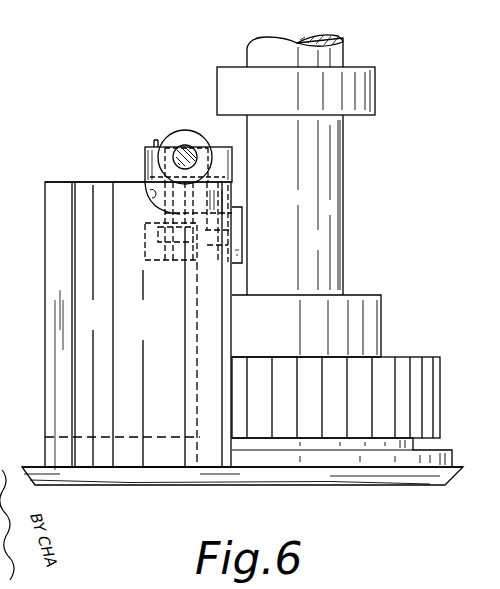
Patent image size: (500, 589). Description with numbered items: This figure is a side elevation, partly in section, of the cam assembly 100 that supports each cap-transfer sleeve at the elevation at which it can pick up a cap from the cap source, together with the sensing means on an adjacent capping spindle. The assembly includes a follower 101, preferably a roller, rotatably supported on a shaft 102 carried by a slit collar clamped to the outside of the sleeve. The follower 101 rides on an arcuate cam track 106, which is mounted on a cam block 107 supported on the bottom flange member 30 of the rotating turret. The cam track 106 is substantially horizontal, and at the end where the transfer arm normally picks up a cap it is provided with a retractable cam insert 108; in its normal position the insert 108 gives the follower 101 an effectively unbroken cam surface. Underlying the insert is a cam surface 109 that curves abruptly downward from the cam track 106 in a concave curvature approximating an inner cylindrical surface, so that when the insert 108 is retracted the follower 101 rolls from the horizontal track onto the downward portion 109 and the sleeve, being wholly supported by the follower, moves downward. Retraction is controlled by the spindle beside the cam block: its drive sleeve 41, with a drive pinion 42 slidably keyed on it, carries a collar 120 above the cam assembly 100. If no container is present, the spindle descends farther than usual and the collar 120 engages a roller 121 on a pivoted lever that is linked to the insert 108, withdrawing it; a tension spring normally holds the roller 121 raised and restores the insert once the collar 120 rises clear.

The bottom flange member 30 is at (35, 467).
The drive sleeve 41 is at (338, 158).
The drive pinion 42 is at (437, 370).
The cam assembly 100 is at (138, 150).
The follower 101 is at (176, 134).
The shaft 102 is at (186, 150).
The arcuate cam track 106 is at (112, 182).
The cam block 107 is at (152, 328).
The retractable cam insert 108 is at (185, 203).
The cam surface 109 is at (156, 200).
The collar 120 is at (378, 95).
The roller 121 is at (236, 262).